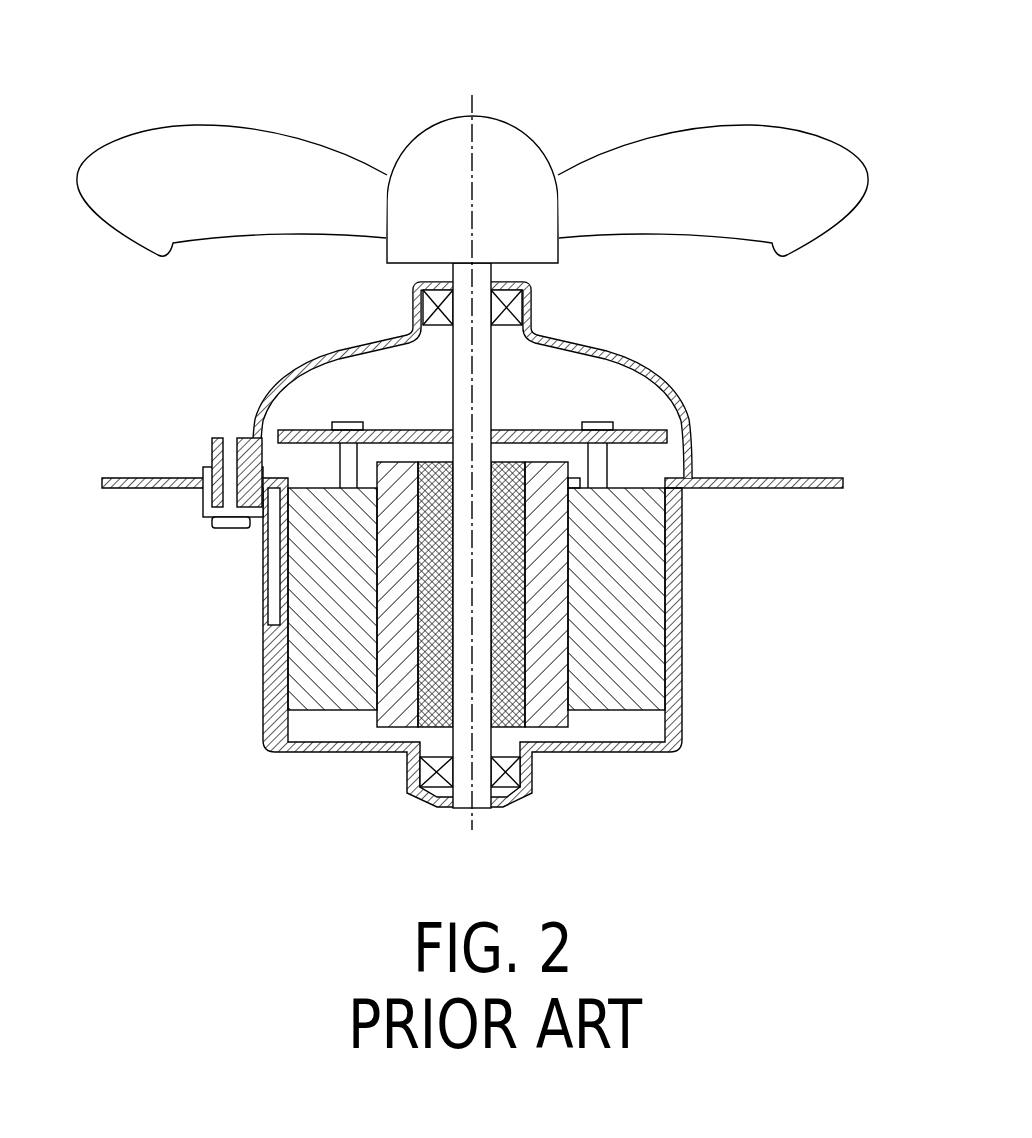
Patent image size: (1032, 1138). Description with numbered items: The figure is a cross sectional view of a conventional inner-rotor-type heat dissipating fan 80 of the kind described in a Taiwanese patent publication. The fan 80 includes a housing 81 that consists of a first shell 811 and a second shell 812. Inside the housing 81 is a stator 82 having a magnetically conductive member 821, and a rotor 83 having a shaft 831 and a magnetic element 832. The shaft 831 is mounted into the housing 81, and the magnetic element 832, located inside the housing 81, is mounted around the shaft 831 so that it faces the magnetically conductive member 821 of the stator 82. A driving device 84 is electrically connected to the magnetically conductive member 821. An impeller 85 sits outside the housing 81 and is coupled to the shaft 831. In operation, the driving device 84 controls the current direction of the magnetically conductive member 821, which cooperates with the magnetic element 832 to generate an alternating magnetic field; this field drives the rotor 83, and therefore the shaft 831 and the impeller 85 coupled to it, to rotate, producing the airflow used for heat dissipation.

The inner-rotor-type heat dissipating fan 80 is at (477, 139).
The impeller 85 is at (783, 128).
The housing 81 is at (693, 383).
The first shell 811 is at (693, 418).
The second shell 812 is at (682, 603).
The stator 82 is at (303, 473).
The magnetically conductive member 821 is at (298, 587).
The rotor 83 is at (483, 539).
The shaft 831 is at (482, 362).
The magnetic element 832 is at (545, 722).
The driving device 84 is at (623, 427).